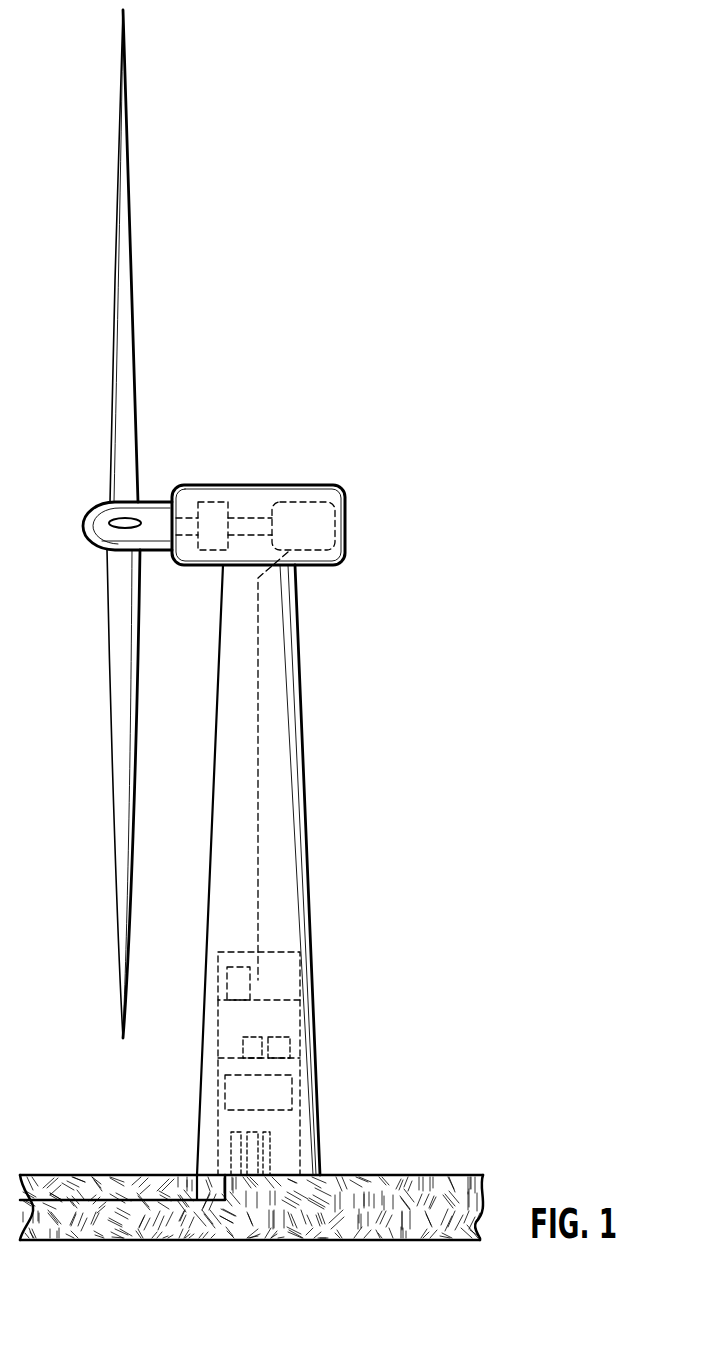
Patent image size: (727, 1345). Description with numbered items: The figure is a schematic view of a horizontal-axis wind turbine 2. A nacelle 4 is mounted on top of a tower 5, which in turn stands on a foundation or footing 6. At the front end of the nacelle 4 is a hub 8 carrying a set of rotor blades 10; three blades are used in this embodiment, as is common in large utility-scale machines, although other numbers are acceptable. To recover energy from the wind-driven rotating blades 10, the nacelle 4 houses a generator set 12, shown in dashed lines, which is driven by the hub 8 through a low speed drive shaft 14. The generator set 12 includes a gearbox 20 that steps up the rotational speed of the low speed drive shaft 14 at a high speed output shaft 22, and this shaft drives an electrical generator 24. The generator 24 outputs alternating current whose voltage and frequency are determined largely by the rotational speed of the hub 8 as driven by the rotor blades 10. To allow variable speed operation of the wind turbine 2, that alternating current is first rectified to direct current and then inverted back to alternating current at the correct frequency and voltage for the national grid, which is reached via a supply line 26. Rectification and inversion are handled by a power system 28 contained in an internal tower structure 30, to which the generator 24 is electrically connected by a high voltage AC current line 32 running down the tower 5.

The wind turbine 2 is at (407, 311).
The nacelle 4 is at (290, 510).
The tower 5 is at (300, 668).
The foundation or footing 6 is at (360, 1190).
The hub 8 is at (97, 537).
The rotor blades 10 is at (115, 521).
The generator set 12 is at (348, 517).
The low speed drive shaft 14 is at (190, 535).
The gearbox 20 is at (208, 502).
The high speed output shaft 22 is at (248, 518).
The electrical generator 24 is at (305, 502).
The supply line 26 is at (110, 1200).
The power system 28 is at (303, 1023).
The internal tower structure 30 is at (300, 972).
The high voltage AC current line 32 is at (260, 803).